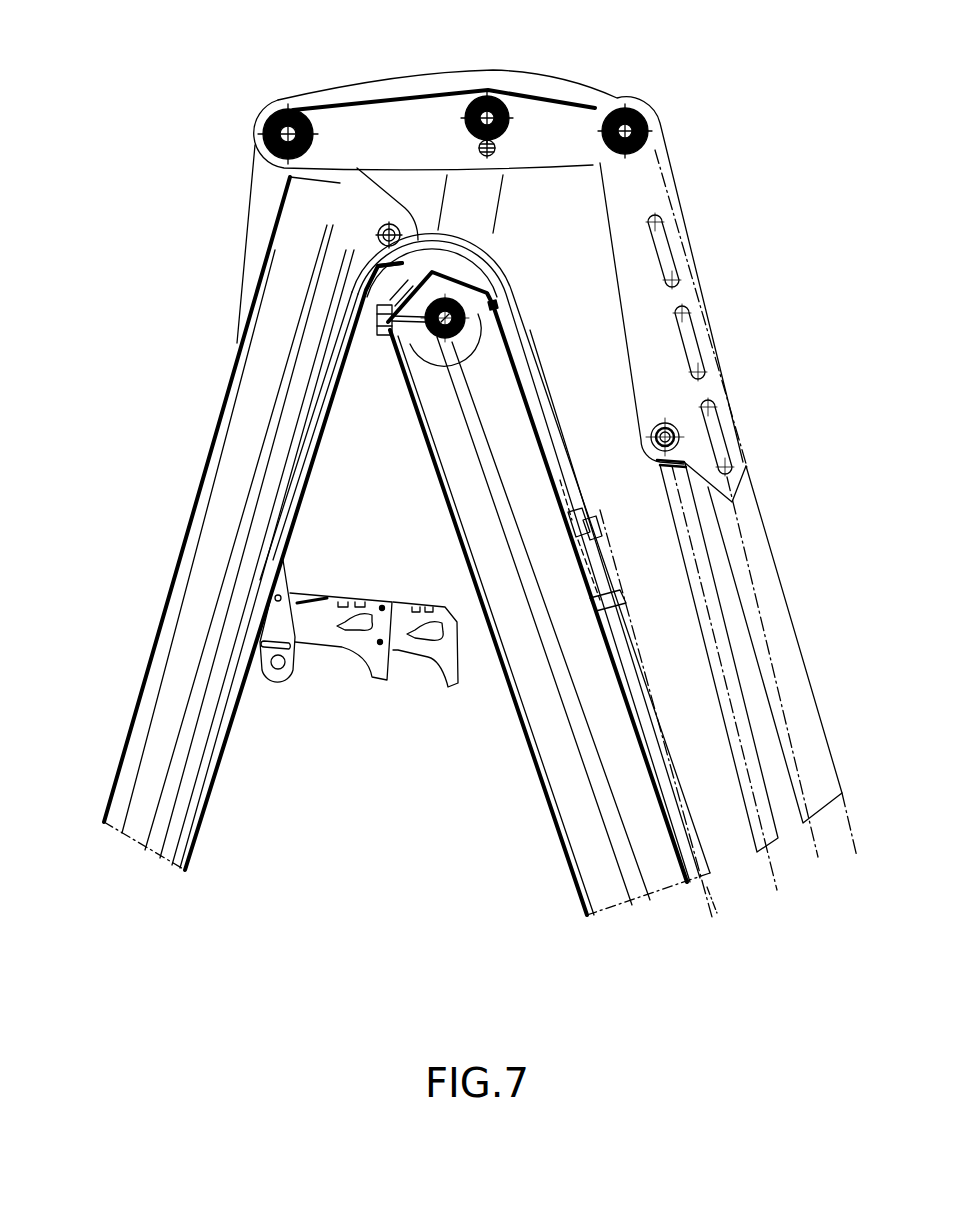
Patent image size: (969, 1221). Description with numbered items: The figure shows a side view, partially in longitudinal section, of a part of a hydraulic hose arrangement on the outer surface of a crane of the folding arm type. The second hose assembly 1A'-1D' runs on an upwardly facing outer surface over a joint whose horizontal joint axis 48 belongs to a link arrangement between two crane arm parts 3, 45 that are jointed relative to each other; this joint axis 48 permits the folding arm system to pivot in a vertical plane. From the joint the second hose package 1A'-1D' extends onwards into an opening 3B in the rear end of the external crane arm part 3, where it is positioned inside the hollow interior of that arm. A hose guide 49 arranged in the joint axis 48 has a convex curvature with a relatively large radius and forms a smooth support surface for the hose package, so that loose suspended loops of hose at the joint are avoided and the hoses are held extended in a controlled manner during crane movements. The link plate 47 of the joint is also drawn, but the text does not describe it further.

The external crane arm part 3 is at (223, 762).
The crane arm part 45 is at (535, 762).
The top hinge plate 47 is at (547, 128).
The horizontal joint axis 48 is at (423, 335).
The hose guide 49 is at (403, 268).
The opening 3B is at (346, 240).
The second hose assembly 1A'-1D' is at (446, 520).